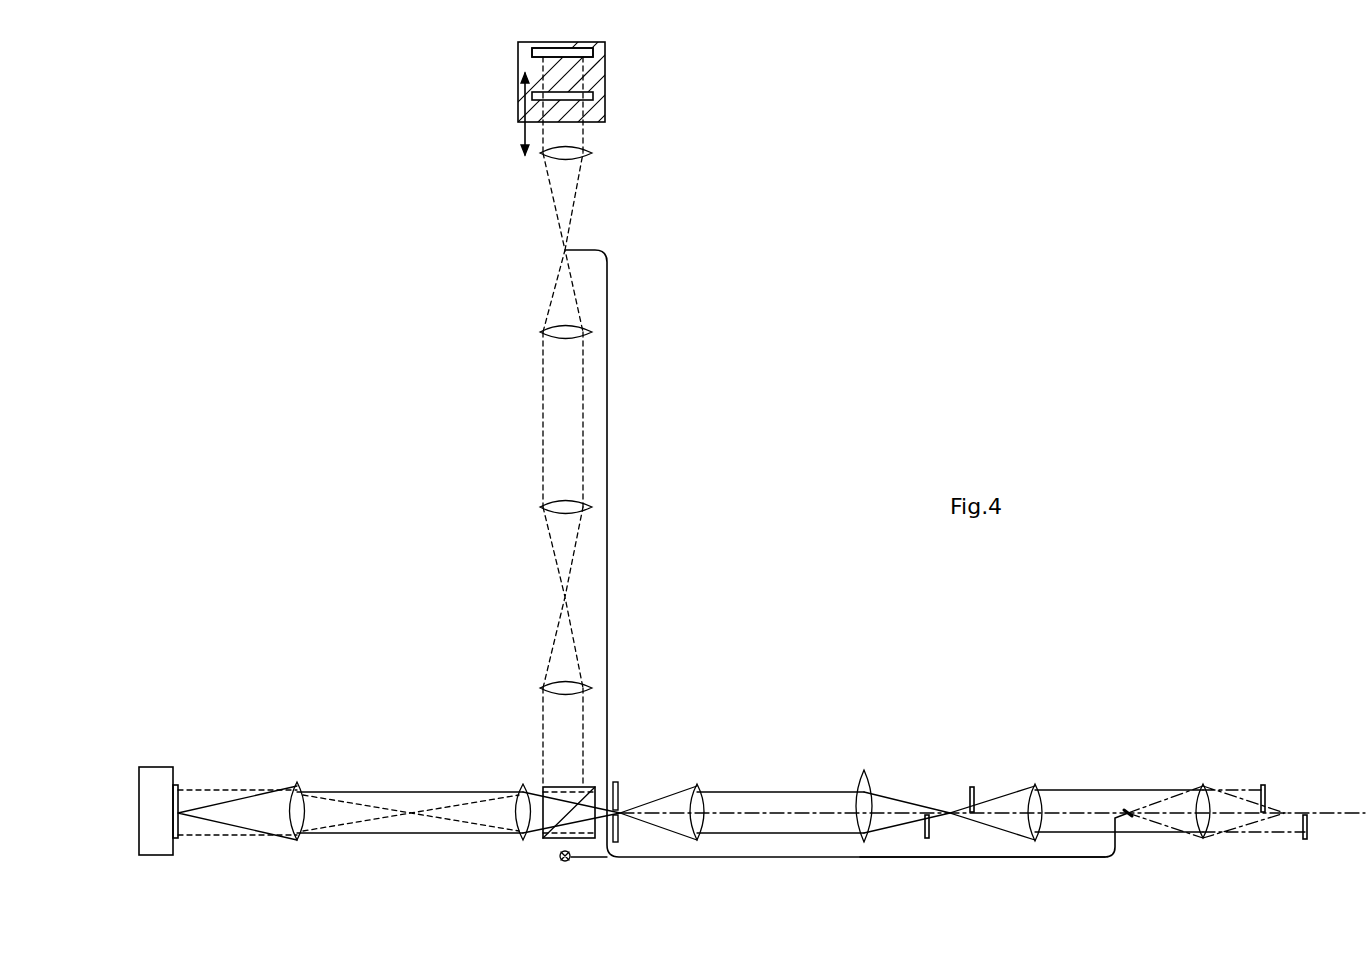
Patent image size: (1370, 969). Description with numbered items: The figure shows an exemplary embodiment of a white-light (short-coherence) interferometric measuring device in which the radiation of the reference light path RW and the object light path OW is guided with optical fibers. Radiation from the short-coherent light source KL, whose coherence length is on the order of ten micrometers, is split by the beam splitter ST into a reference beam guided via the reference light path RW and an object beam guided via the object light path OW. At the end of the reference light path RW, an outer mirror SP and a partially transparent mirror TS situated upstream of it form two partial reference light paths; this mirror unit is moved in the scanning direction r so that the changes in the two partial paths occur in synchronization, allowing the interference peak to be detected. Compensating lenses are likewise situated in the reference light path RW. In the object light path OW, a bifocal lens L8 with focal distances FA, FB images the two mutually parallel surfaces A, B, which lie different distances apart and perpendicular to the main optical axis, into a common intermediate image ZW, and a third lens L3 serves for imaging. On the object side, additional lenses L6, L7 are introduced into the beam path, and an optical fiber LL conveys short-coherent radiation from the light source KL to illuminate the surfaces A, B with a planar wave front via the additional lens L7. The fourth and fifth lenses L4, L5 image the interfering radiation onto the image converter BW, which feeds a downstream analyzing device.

The partially transparent mirror TS is at (607, 62).
The outer mirror SP is at (606, 96).
The scanning direction r is at (516, 114).
The reference light path RW is at (543, 433).
The optical fiber LL is at (708, 859).
The object light path OW is at (852, 860).
The short-coherent light source KL is at (571, 862).
The image converter BW is at (192, 774).
The fifth lens L5 is at (300, 782).
The fourth lens L4 is at (514, 782).
The beam splitter ST is at (548, 838).
The common intermediate image ZW is at (623, 780).
The third lens L3 is at (702, 784).
The lens 8 L8 is at (870, 768).
The focal distance of first lens FA is at (930, 812).
The focal distance of second lens FB is at (976, 785).
The surface A is at (931, 830).
The surface B is at (980, 790).
The additional lens L6 is at (1040, 783).
The additional lens L7 is at (1208, 784).